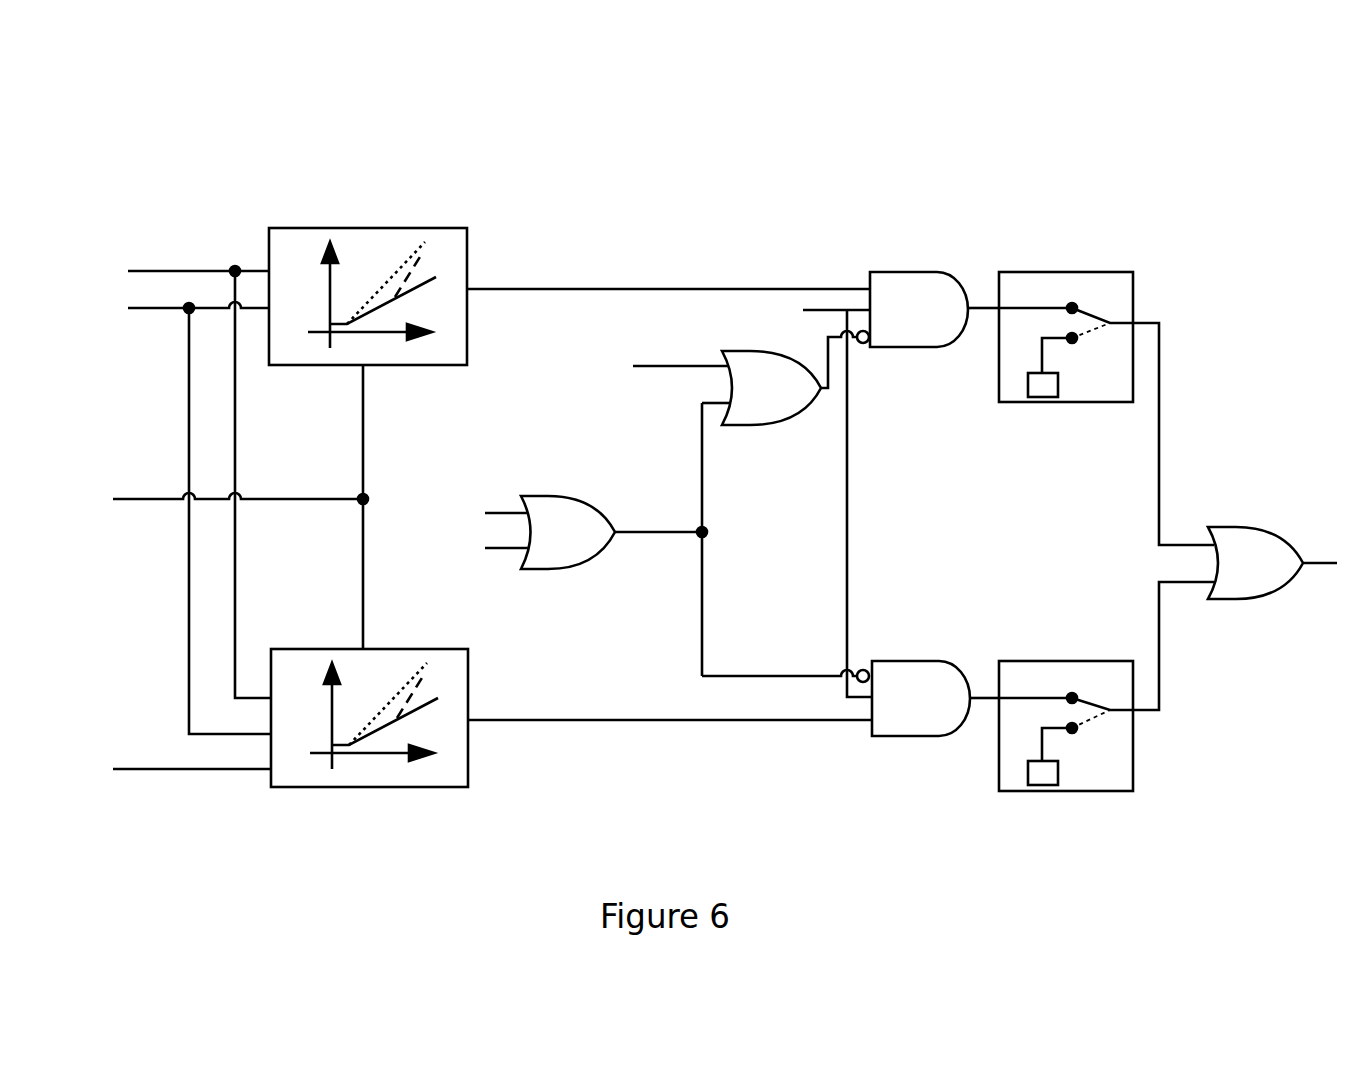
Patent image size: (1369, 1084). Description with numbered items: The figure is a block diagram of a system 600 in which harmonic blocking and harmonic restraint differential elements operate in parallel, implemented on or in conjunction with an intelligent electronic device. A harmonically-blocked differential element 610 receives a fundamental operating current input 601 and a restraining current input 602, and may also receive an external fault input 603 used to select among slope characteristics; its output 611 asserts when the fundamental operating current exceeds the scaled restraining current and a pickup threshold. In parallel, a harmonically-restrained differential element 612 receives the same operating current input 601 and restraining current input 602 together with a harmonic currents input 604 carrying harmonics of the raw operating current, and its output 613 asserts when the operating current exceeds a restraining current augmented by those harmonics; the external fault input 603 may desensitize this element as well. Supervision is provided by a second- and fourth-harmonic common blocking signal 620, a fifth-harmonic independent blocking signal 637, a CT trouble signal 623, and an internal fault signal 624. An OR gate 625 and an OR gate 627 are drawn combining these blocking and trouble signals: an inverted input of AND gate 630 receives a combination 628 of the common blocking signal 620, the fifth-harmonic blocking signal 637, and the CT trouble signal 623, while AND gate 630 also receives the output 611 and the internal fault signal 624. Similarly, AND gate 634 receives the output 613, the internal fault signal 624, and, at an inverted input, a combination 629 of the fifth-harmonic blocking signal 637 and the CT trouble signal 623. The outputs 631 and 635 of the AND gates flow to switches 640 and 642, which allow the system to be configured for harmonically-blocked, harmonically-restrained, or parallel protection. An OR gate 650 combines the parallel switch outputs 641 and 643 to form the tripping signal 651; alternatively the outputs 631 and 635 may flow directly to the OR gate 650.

The system 600 is at (210, 121).
The fundamental operating current input 601 is at (163, 255).
The restraining current input 602 is at (164, 502).
The external fault input 603 is at (210, 507).
The harmonic currents input 604 is at (162, 754).
The harmonically-blocked differential element 610 is at (357, 228).
The output of the harmonically-blocked differential element 611 is at (568, 290).
The harmonically-restrained differential element 612 is at (445, 787).
The output of the harmonically-restrained differential element 613 is at (610, 721).
The second- and fourth-harmonic common blocking signal 620 is at (652, 366).
The CT trouble signal 623 is at (500, 548).
The internal fault signal 624 is at (847, 310).
The OR gate 625 is at (588, 543).
The OR gate 627 is at (788, 398).
The combination of blocking signals 628 is at (827, 340).
The combination of blocking signals 629 is at (808, 676).
The AND gate 630 is at (937, 320).
The output of AND gate 631 is at (990, 309).
The AND gate 634 is at (940, 710).
The output of AND gate 635 is at (990, 699).
The fifth-harmonic independent blocking signal 637 is at (497, 513).
The switch 640 is at (1058, 272).
The output of switch 641 is at (1160, 338).
The switch 642 is at (1058, 661).
The output of switch 643 is at (1160, 694).
The OR gate 650 is at (1272, 572).
The tripping signal 651 is at (1330, 554).